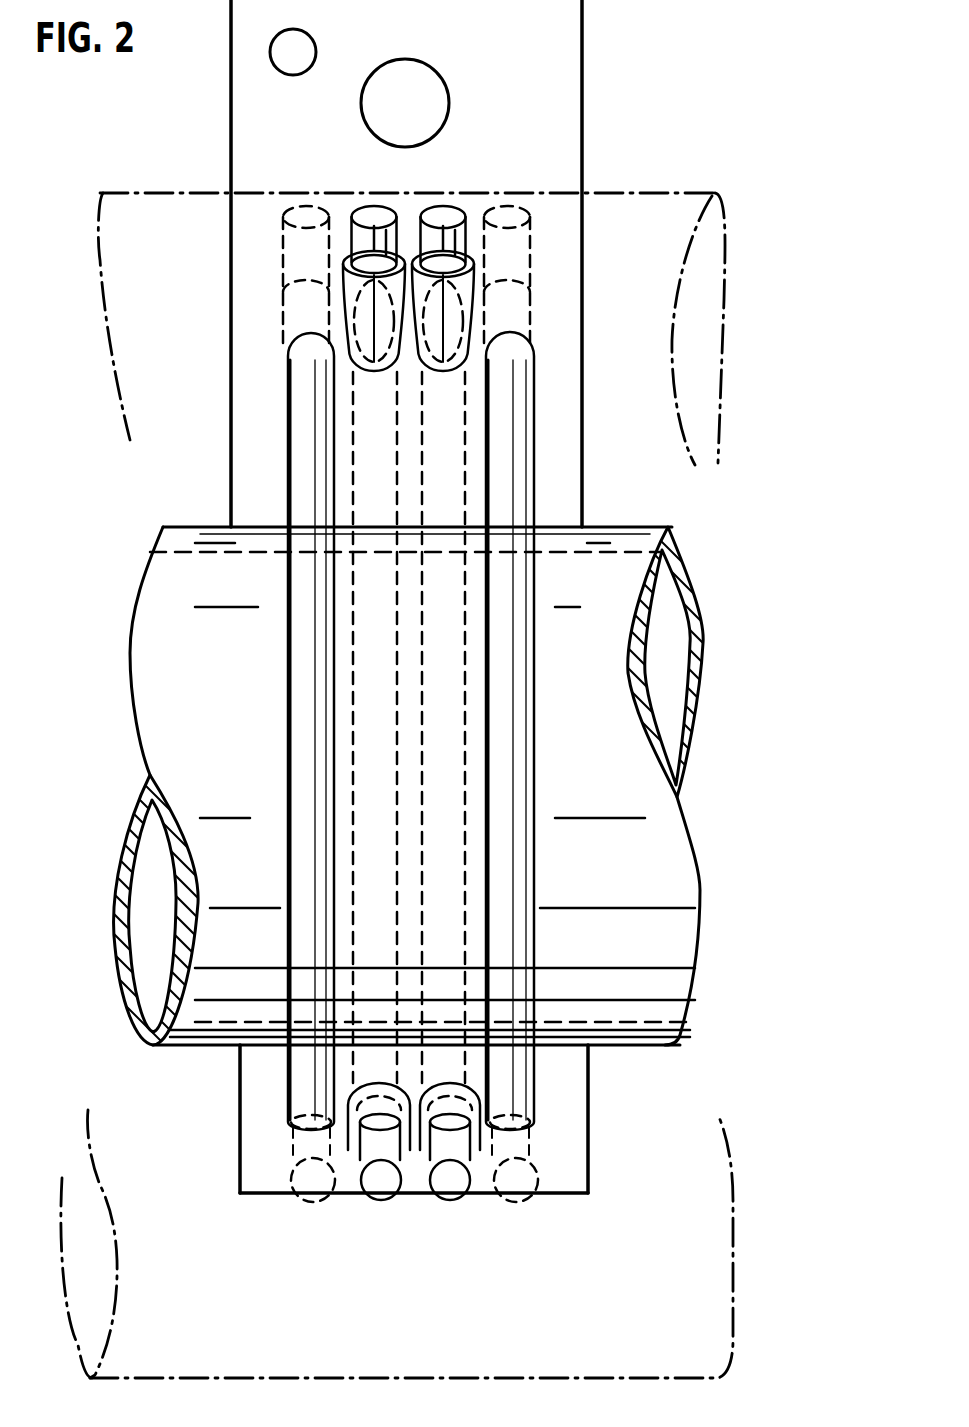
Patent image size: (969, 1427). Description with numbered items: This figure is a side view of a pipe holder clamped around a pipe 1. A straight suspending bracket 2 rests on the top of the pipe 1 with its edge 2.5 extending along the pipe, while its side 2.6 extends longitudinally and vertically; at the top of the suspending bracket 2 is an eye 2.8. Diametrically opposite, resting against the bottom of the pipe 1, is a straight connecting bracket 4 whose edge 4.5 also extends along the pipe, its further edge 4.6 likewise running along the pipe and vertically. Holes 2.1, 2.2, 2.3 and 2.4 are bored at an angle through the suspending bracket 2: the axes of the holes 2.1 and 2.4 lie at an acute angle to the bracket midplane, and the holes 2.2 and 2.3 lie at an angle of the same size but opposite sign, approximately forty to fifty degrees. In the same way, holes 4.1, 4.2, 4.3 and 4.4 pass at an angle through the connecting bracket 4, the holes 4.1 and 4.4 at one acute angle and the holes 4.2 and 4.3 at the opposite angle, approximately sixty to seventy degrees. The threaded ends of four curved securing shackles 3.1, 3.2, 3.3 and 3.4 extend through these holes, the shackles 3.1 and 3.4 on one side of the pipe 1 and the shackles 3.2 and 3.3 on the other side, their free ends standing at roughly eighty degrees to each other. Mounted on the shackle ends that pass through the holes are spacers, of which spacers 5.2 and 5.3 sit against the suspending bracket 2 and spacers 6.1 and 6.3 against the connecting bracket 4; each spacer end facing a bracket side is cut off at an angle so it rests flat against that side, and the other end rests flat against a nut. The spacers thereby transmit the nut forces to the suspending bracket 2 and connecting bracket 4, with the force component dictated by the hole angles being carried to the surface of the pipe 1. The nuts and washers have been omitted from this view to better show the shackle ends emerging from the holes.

The pipe 1 is at (665, 540).
The suspending bracket 2 is at (565, 178).
The hole 2.1 is at (290, 343).
The hole 2.2 is at (330, 372).
The hole 2.3 is at (532, 385).
The hole 2.4 is at (530, 356).
The edge of suspending bracket 2.5 is at (240, 527).
The side of suspending bracket 2.6 is at (233, 137).
The eye 2.8 is at (445, 82).
The securing shackle 3.1 is at (290, 222).
The securing shackle 3.2 is at (365, 476).
The securing shackle 3.3 is at (447, 218).
The securing shackle 3.4 is at (520, 482).
The connecting bracket 4 is at (575, 1172).
The hole 4.1 is at (330, 1125).
The hole 4.2 is at (360, 1120).
The hole 4.3 is at (540, 1097).
The hole 4.4 is at (540, 1143).
The edge of connecting bracket 4.5 is at (565, 1045).
The edge of connecting bracket 4.6 is at (555, 1185).
The spacer 5.2 is at (345, 297).
The spacer 5.3 is at (465, 270).
The spacer 6.1 is at (348, 1140).
The spacer 6.3 is at (480, 1143).